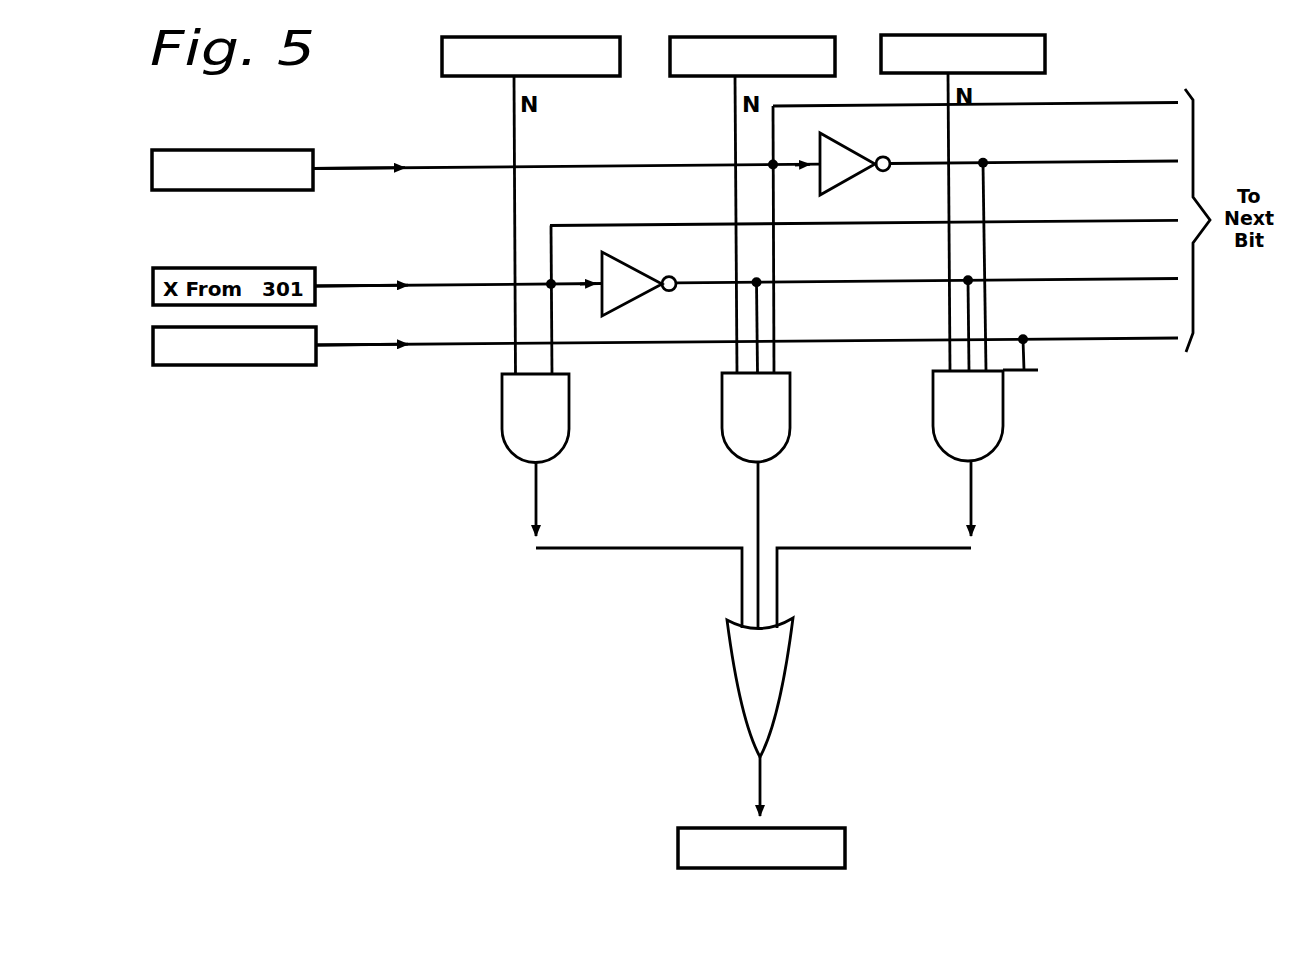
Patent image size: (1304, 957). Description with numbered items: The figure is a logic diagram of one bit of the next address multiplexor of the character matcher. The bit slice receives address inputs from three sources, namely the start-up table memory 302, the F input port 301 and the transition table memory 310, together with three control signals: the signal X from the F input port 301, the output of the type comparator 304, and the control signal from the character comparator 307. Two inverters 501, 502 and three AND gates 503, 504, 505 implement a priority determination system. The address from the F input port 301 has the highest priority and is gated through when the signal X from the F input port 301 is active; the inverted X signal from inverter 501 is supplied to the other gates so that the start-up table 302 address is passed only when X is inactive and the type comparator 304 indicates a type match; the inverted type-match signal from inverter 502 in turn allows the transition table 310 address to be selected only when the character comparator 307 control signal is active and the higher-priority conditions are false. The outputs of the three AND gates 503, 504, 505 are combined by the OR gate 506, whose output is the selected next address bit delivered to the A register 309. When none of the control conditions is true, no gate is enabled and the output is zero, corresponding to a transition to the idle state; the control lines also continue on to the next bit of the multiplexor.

The inverter 501 is at (638, 266).
The inverter 502 is at (852, 146).
The AND gate 503 is at (548, 421).
The AND gate 504 is at (770, 420).
The AND gate 505 is at (981, 418).
The OR gate 506 is at (794, 650).
The F input port 301 is at (531, 56).
The start-up table memory 302 is at (752, 56).
The type comparator 304 is at (232, 170).
The character comparator 307 is at (234, 346).
The transition table memory 310 is at (963, 54).
The A register 309 is at (761, 848).